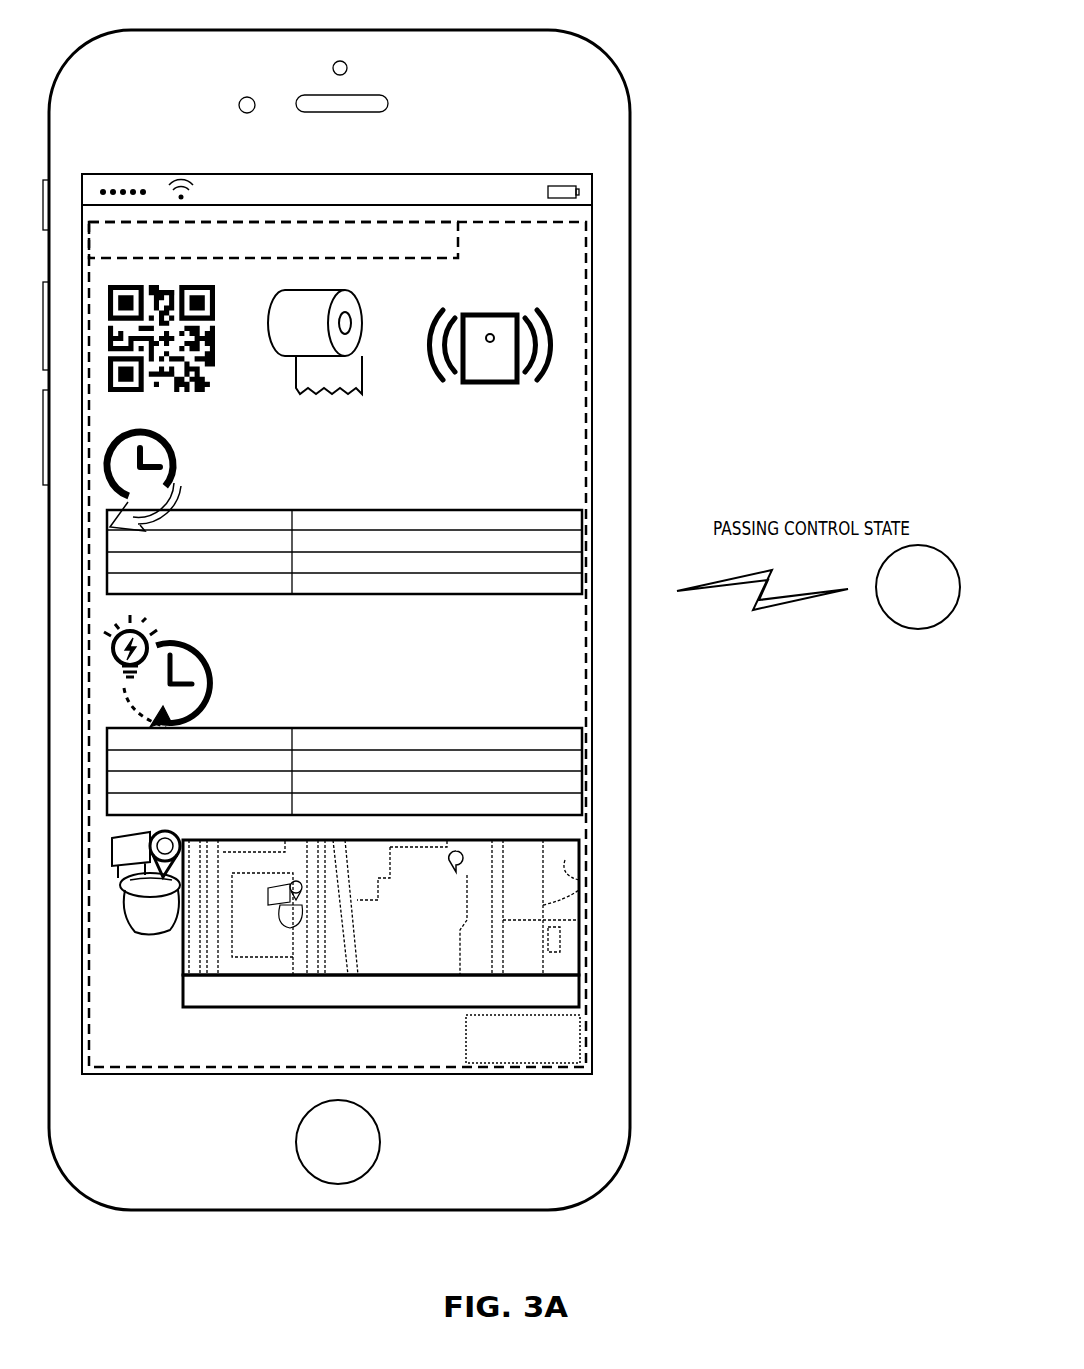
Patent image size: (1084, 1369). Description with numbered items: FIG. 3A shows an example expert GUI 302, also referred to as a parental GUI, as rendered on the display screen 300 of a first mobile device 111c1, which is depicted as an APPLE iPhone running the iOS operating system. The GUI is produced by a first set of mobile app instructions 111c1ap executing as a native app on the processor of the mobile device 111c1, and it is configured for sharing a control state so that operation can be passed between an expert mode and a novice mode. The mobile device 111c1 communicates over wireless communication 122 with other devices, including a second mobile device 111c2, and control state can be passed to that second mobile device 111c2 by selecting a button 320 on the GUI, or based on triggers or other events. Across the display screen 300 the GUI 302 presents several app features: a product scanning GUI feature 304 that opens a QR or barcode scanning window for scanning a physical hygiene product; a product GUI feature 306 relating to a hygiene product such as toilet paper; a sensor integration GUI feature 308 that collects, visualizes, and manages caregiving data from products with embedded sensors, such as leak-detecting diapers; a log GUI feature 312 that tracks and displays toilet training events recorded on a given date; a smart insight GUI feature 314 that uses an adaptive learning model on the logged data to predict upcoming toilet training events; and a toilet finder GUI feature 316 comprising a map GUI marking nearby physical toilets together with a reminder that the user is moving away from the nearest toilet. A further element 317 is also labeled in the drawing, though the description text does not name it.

The mobile device 111c1 is at (652, 81).
The display screen 300 is at (593, 187).
The expert GUI 302 is at (584, 246).
The first set of mobile app instructions 111c1ap is at (460, 240).
The product scanning GUI feature 304 is at (218, 302).
The product GUI feature 306 is at (355, 302).
The sensor integration GUI feature 308 is at (483, 313).
The log GUI feature 312 is at (175, 447).
The smart insight GUI feature 314 is at (188, 650).
The toilet finder GUI feature 316 is at (183, 836).
The movement status message 317 is at (592, 994).
The button 320 is at (466, 1038).
The wireless communication 122 is at (756, 576).
The mobile device 111c2 is at (918, 587).